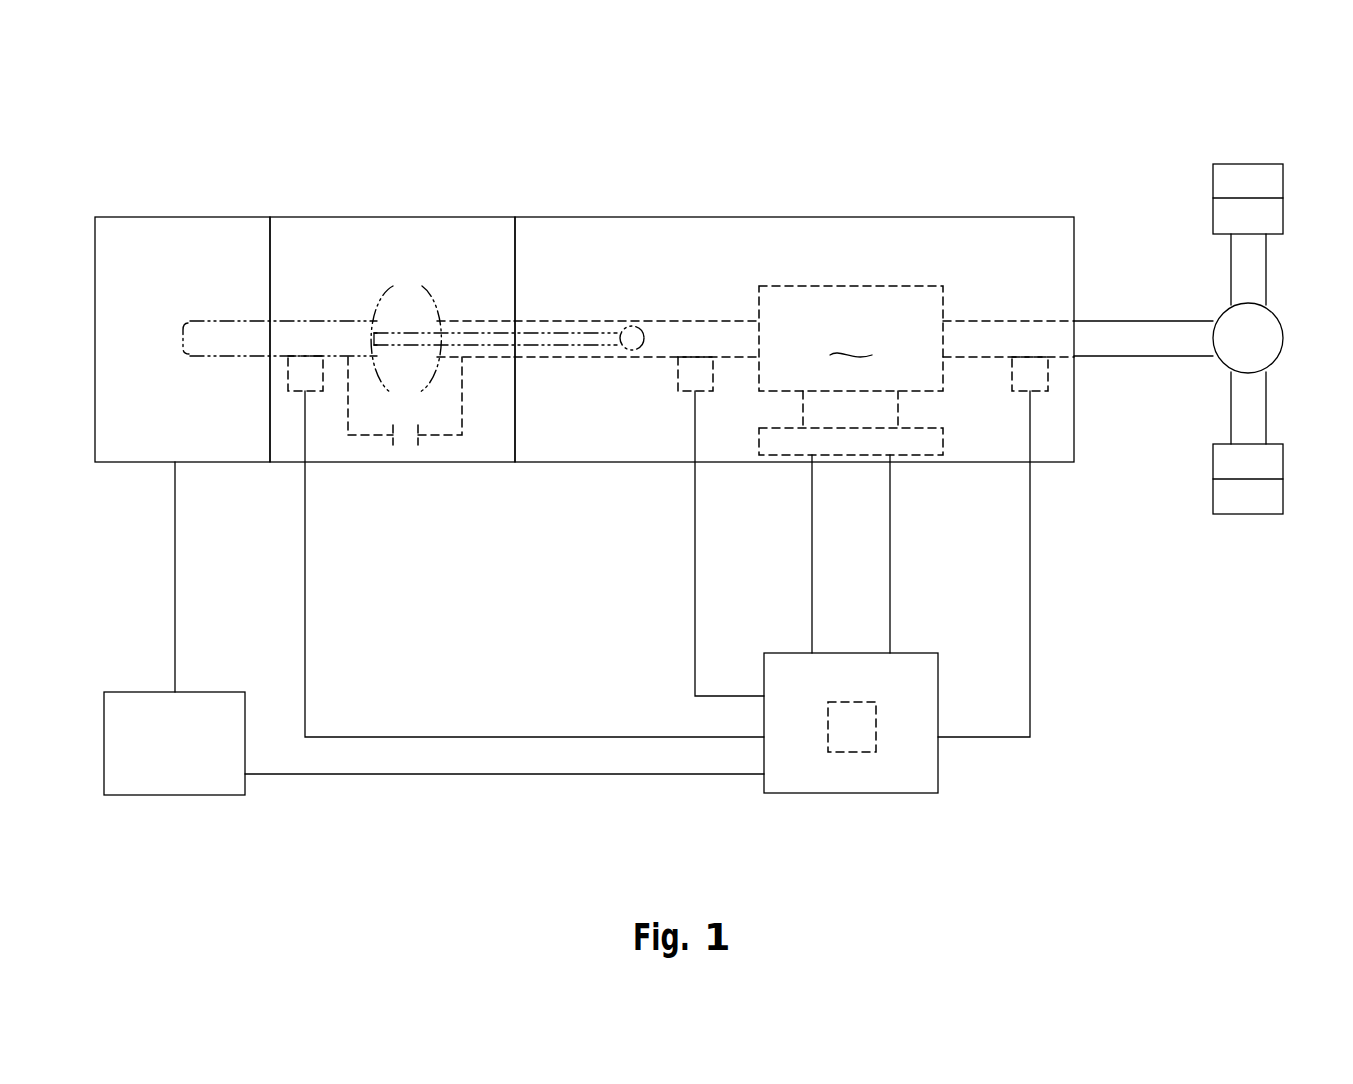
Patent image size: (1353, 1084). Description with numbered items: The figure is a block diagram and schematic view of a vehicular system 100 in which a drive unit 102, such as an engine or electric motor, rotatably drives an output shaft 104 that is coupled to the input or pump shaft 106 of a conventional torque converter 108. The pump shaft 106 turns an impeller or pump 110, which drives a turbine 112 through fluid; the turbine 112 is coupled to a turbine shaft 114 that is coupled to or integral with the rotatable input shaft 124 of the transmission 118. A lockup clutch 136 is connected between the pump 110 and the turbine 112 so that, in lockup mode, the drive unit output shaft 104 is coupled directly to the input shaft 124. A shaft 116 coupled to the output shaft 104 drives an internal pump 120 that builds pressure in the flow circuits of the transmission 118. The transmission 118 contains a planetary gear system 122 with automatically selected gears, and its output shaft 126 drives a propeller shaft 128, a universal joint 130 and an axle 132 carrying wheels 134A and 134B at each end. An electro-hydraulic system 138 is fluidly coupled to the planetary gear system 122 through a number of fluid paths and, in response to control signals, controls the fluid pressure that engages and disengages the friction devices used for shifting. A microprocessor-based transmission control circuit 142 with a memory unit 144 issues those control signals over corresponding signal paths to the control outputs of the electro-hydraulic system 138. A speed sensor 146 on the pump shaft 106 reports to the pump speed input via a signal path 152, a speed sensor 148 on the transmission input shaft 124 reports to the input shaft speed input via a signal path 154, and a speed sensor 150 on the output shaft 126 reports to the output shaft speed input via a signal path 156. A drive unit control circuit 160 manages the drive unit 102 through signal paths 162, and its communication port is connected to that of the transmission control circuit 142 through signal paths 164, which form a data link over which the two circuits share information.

The vehicular system 100 is at (147, 150).
The drive unit 102 is at (212, 217).
The output shaft 104 is at (222, 320).
The input or pump shaft 106 is at (315, 320).
The torque converter 108 is at (400, 217).
The impeller or pump 110 is at (382, 297).
The turbine 112 is at (425, 288).
The turbine shaft 114 is at (481, 318).
The shaft 116 is at (540, 340).
The transmission 118 is at (792, 217).
The internal pump 120 is at (632, 326).
The planetary gear system 122 is at (851, 338).
The input shaft 124 is at (710, 320).
The output shaft 126 is at (1008, 320).
The propeller shaft 128 is at (1142, 320).
The universal joint 130 is at (1280, 357).
The axle 132 is at (1267, 275).
The wheel 134A is at (1250, 164).
The wheel 134B is at (1248, 514).
The lockup clutch 136 is at (418, 440).
The electro-hydraulic system 138 is at (913, 440).
The transmission control circuit 142 is at (827, 793).
The memory unit 144 is at (862, 752).
The speed sensor 146 is at (288, 372).
The speed sensor 148 is at (680, 372).
The speed sensor 150 is at (1048, 372).
The signal path 152 is at (462, 737).
The signal path 154 is at (695, 580).
The signal path 156 is at (1030, 620).
The drive unit control circuit 160 is at (175, 795).
The signal paths 162 is at (175, 575).
The signal paths 164 is at (500, 774).